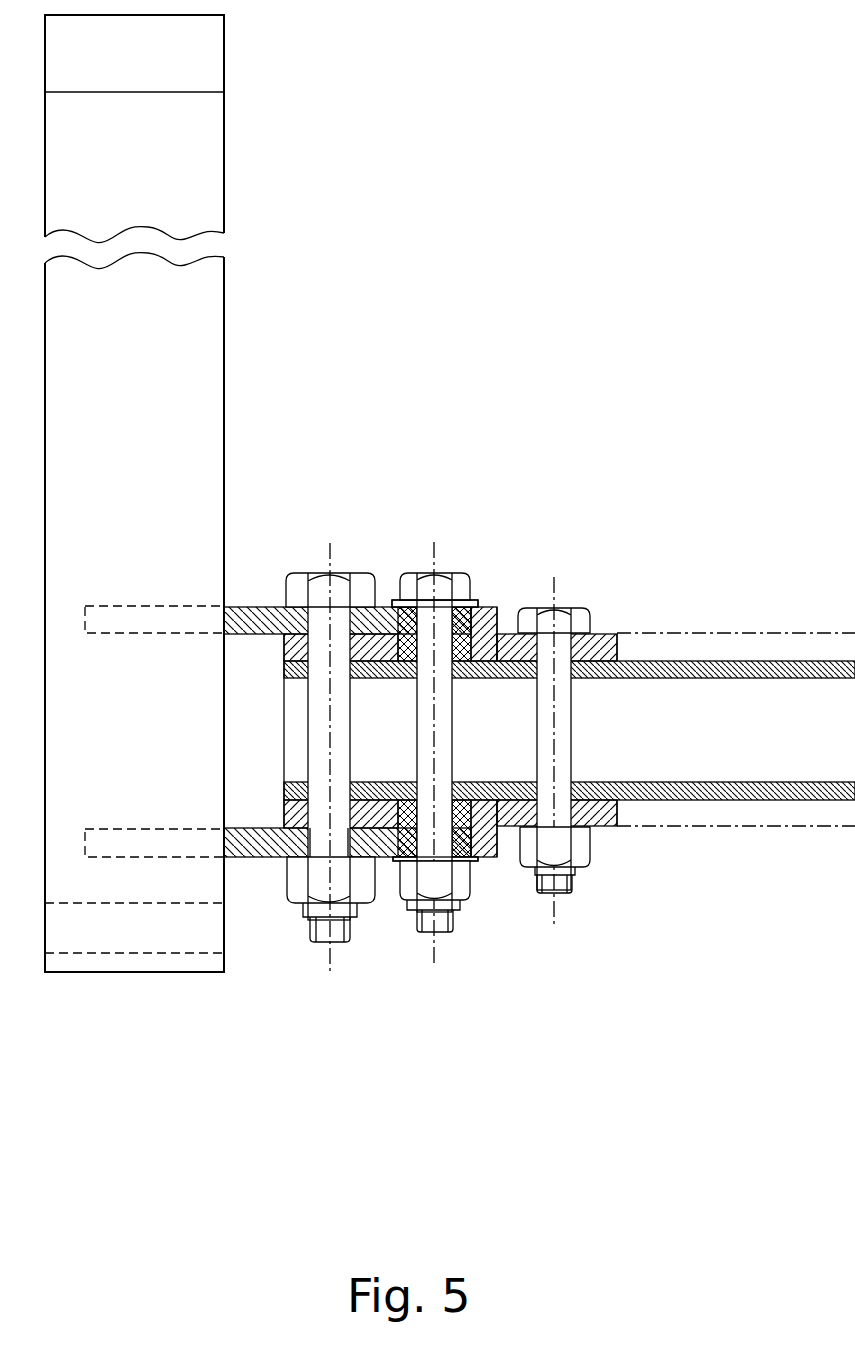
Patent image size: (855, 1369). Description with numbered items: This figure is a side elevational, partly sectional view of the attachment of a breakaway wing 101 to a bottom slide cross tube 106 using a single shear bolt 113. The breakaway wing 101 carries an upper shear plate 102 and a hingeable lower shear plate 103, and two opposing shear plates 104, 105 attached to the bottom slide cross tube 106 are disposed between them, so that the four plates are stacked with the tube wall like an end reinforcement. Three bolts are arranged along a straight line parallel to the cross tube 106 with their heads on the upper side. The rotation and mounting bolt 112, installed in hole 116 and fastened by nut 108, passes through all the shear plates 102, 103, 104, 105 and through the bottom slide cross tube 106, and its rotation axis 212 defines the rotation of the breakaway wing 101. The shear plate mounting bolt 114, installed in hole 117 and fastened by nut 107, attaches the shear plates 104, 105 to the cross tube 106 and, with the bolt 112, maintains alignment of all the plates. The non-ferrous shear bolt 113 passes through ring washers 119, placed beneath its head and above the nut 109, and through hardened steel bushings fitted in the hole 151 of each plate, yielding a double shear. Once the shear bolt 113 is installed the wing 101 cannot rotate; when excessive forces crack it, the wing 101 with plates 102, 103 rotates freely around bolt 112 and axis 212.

The breakaway wing 101 is at (120, 965).
The upper shear plate 102 is at (241, 612).
The lower shear plate 103 is at (271, 851).
The shear plate 104 is at (288, 645).
The shear plate 105 is at (283, 802).
The bottom slide cross tube 106 is at (768, 673).
The nut 107 is at (580, 872).
The nut 108 is at (307, 907).
The nut 109 is at (410, 893).
The rotation and mounting bolt 112 is at (315, 573).
The shear bolt 113 is at (438, 577).
The shear plate mounting bolt 114 is at (562, 608).
The hole 116 is at (318, 835).
The hole 117 is at (590, 838).
The ring washer 119 is at (472, 600).
The hole 151 is at (483, 607).
The rotation axis 212 is at (333, 552).